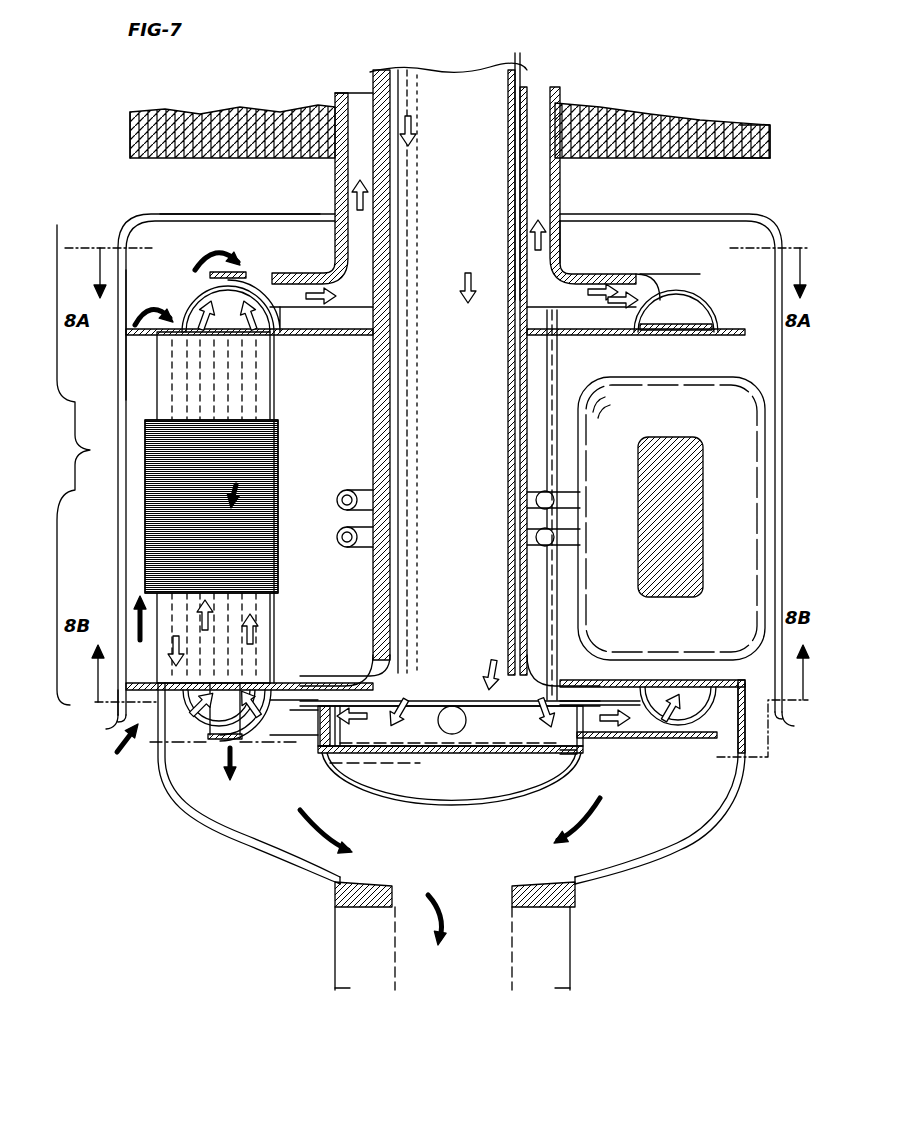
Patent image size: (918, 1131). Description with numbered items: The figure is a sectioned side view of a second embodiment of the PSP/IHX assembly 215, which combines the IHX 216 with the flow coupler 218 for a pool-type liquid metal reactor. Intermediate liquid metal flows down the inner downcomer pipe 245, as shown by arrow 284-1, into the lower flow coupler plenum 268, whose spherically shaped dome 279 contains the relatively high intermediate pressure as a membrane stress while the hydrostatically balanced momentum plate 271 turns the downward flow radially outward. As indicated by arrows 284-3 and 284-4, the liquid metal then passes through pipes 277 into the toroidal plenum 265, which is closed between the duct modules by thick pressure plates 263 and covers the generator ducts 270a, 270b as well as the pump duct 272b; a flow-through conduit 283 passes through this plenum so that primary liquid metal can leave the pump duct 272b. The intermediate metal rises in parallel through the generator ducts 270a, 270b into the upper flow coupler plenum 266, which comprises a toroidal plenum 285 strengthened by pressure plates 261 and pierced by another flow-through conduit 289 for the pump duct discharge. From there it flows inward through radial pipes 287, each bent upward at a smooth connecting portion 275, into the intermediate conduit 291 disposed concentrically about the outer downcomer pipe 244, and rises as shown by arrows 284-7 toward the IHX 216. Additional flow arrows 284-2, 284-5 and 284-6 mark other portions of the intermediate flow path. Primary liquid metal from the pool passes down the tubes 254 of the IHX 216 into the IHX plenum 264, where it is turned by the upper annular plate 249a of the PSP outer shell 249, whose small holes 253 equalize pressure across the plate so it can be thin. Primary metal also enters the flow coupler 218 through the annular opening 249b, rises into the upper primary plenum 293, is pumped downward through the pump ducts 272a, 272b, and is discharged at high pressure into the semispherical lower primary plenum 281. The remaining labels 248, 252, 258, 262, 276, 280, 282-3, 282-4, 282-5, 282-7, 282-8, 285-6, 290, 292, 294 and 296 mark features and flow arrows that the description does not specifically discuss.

The PSP/IHX assembly 215 is at (692, 54).
The IHX 216 is at (127, 129).
The flow coupler 218 is at (65, 465).
The outer downcomer pipe 244 is at (522, 94).
The inner downcomer pipe 245 is at (507, 120).
The fin block 248 is at (773, 136).
The PSP outer shell 249 is at (786, 462).
The upper annular plate 249a is at (228, 199).
The annularly shaped opening 249b is at (115, 723).
The fin block bottom 252 is at (738, 160).
The small holes 253 is at (163, 212).
The tubes 254 is at (236, 160).
The partition plate 258 is at (626, 336).
The pressure plate 261 is at (690, 326).
The lower plate 262 is at (636, 680).
The pressure plates 263 is at (712, 684).
The IHX plenum 264 is at (676, 188).
The toroidal plenum 265 is at (704, 735).
The upper flow coupler plenum 266 is at (690, 284).
The lower flow coupler plenum 268 is at (586, 790).
The generator duct 270a is at (186, 393).
The generator duct 270b is at (262, 365).
The hydrostatically balanced momentum plate 271 is at (400, 768).
The pump duct 272a is at (156, 349).
The pump duct 272b is at (236, 348).
The smooth connecting portion 275 is at (360, 312).
The combustion chamber housing 276 is at (746, 376).
The pipes 277 is at (272, 740).
The spherically shaped dome 279 is at (455, 812).
The heater element 280 is at (140, 508).
The lower primary plenum 281 is at (451, 795).
The flow arrow 282-3 is at (118, 752).
The flow arrow 282-4 is at (130, 608).
The flow arrow 282-5 is at (232, 258).
The flow arrow 282-7 is at (232, 780).
The flow arrow 282-8 is at (410, 950).
The flow-through conduit 283 is at (197, 725).
The flow arrow 284-1 is at (415, 118).
The flow arrow 284-2 is at (490, 668).
The flow arrow 284-3 is at (610, 740).
The flow arrow 284-4 is at (248, 690).
The flow arrow 284-5 is at (212, 612).
The flow arrow 284-6 is at (190, 318).
The flow arrows 284-7 is at (352, 206).
The toroidal plenum 285 is at (716, 322).
The flow arrow 285-6 is at (246, 498).
The radial pipes 287 is at (586, 288).
The flow-through conduit 289 is at (262, 280).
The water inlet pipe 290 is at (350, 490).
The intermediate conduit 291 is at (561, 190).
The water outlet pipe 292 is at (345, 547).
The upper primary plenum 293 is at (283, 235).
The conduit 294 is at (556, 632).
The supply pipe 296 is at (558, 368).